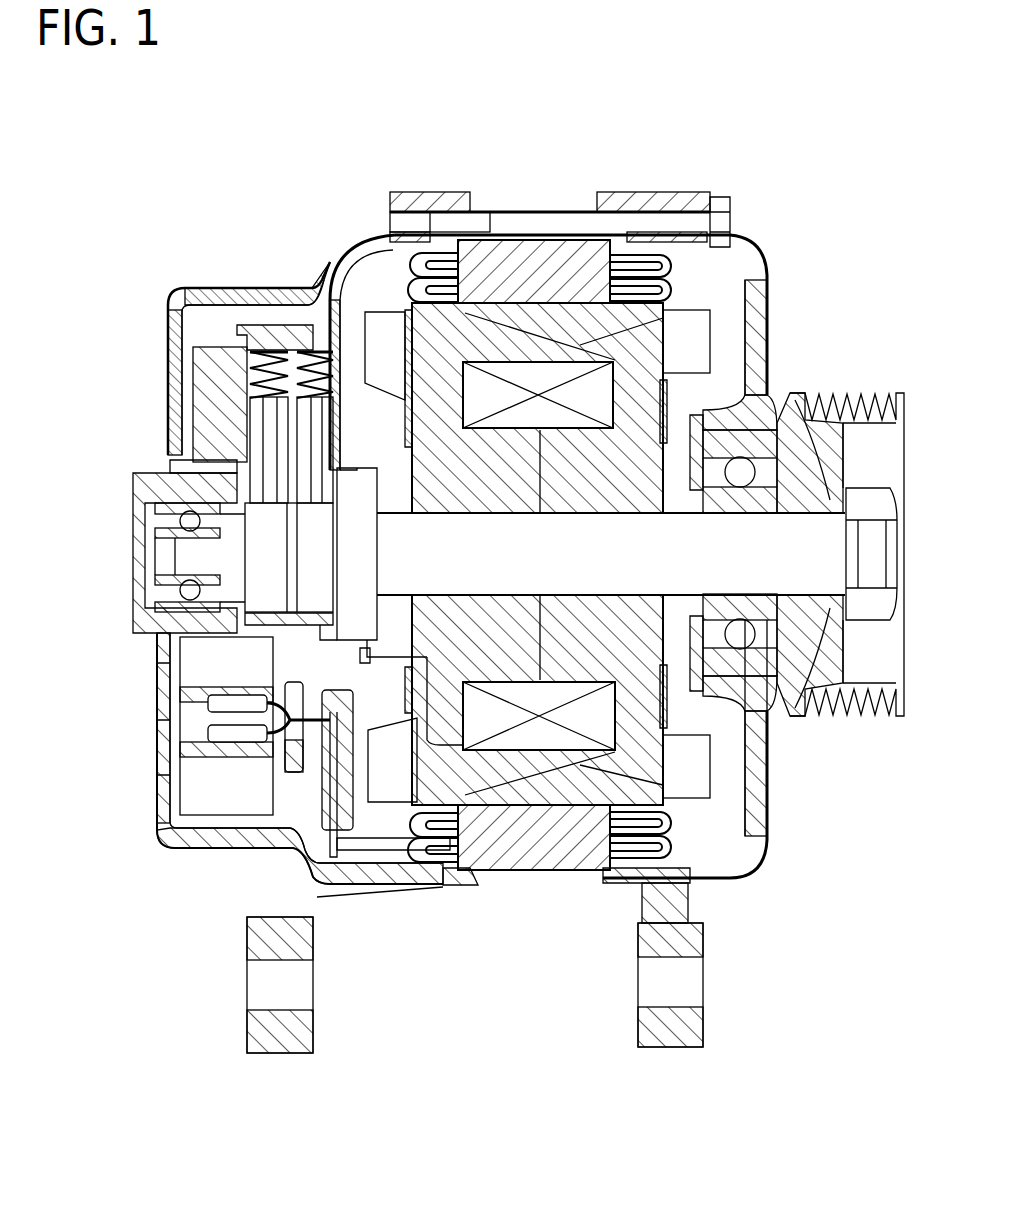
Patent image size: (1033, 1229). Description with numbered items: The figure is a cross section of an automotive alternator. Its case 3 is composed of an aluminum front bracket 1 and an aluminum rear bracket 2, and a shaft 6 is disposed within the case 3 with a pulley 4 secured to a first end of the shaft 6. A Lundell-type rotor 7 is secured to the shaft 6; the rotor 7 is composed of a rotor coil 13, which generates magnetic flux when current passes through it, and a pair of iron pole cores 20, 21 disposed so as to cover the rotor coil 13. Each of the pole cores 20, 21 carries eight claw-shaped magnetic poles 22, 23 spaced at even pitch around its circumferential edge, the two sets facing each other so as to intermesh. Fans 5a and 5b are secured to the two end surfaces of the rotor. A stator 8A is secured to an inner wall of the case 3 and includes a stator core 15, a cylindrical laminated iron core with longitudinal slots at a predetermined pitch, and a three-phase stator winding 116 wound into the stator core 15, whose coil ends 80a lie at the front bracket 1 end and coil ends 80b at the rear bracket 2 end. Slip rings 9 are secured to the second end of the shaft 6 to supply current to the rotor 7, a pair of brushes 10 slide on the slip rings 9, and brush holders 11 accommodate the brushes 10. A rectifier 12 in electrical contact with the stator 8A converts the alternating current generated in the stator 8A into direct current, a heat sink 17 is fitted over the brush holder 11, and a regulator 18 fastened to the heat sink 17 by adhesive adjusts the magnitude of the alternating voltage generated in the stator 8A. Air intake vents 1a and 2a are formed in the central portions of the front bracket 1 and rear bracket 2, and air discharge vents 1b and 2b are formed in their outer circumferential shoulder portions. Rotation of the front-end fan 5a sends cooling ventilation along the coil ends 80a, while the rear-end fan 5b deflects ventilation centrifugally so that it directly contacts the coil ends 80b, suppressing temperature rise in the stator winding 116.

The front bracket 1 is at (773, 803).
The air intake vent 1a is at (770, 737).
The air discharge vent 1b is at (757, 262).
The rear bracket 2 is at (220, 848).
The air intake vent 2a is at (165, 667).
The air discharge vent 2b is at (360, 877).
The case 3 is at (752, 893).
The pulley 4 is at (847, 400).
The front-end fan 5a is at (693, 343).
The rear-end fan 5b is at (377, 337).
The shaft 6 is at (750, 527).
The rotor 7 is at (537, 684).
The stator 8A is at (549, 448).
The slip rings 9 is at (268, 575).
The brushes 10 is at (267, 427).
The brush holders 11 is at (263, 337).
The rectifier 12 is at (220, 753).
The rotor coil 13 is at (543, 735).
The stator core 15 is at (512, 255).
The three-phase stator winding 116 is at (538, 82).
The heat sink 17 is at (177, 310).
The regulator 18 is at (227, 340).
The pole core 20 is at (600, 793).
The pole core 21 is at (443, 715).
The claw-shaped magnetic poles 22 is at (650, 310).
The claw-shaped magnetic poles 23 is at (378, 337).
The coil ends 80a is at (730, 238).
The coil ends 80b is at (427, 257).